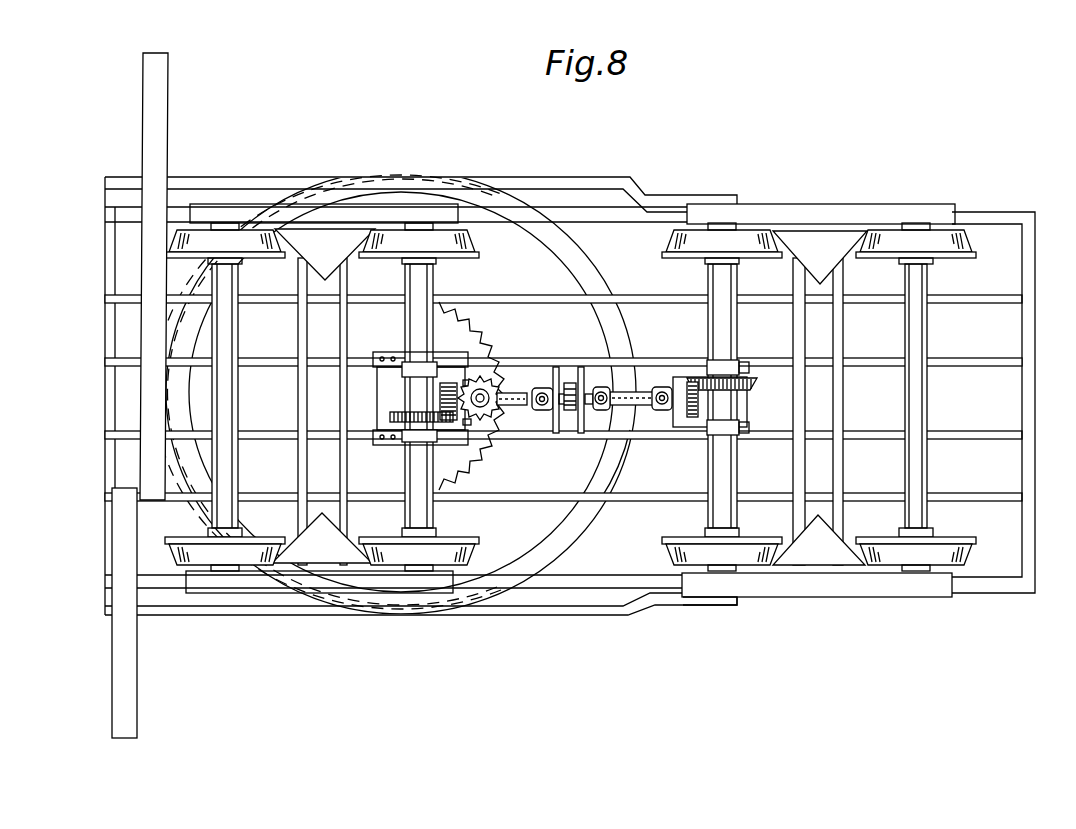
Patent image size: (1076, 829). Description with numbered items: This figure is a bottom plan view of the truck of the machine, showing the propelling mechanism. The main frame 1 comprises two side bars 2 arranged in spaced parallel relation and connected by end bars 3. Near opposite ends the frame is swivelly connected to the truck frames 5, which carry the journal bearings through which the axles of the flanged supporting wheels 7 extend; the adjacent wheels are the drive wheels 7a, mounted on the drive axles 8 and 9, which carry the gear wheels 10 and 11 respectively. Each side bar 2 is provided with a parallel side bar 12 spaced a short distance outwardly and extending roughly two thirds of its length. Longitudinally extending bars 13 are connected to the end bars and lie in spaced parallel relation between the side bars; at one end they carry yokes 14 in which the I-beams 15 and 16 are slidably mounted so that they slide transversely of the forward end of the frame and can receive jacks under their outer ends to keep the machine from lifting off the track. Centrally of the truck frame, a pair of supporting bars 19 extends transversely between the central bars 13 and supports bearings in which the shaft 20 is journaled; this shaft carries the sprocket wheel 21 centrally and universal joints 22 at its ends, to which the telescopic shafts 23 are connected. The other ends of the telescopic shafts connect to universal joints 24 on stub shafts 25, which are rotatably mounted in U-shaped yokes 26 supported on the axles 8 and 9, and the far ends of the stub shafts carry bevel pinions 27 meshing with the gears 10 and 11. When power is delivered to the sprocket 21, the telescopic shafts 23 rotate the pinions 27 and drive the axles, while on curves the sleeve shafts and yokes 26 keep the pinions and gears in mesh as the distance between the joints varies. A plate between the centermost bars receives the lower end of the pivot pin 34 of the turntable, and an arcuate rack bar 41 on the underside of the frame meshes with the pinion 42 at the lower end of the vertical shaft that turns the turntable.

The main frame 1 is at (1006, 208).
The side bars 2 is at (650, 211).
The end bars 3 is at (1033, 366).
The truck frames 5 is at (333, 582).
The supporting wheels 7 is at (253, 578).
The drive wheels 7a is at (470, 556).
The drive axle 8 is at (407, 517).
The drive axle 9 is at (715, 333).
The gear wheel 10 is at (405, 428).
The gear wheel 11 is at (740, 390).
The side bars 12 is at (499, 186).
The longitudinally extending bars 13 is at (760, 358).
The yokes 14 is at (340, 328).
The I-beam 15 is at (135, 667).
The I-beam 16 is at (167, 141).
The supporting bars 19 is at (578, 372).
The shaft 20 is at (550, 438).
The sprocket wheel 21 is at (622, 469).
The universal joints 22 is at (546, 413).
The telescopic shafts 23 is at (626, 394).
The universal joints 24 is at (482, 421).
The stub shafts 25 is at (485, 372).
The U-shaped yokes 26 is at (473, 368).
The bevel pinions 27 is at (420, 379).
The pivot pin 34 is at (407, 383).
The arcuate rack bar 41 is at (490, 325).
The pinion 42 is at (504, 412).